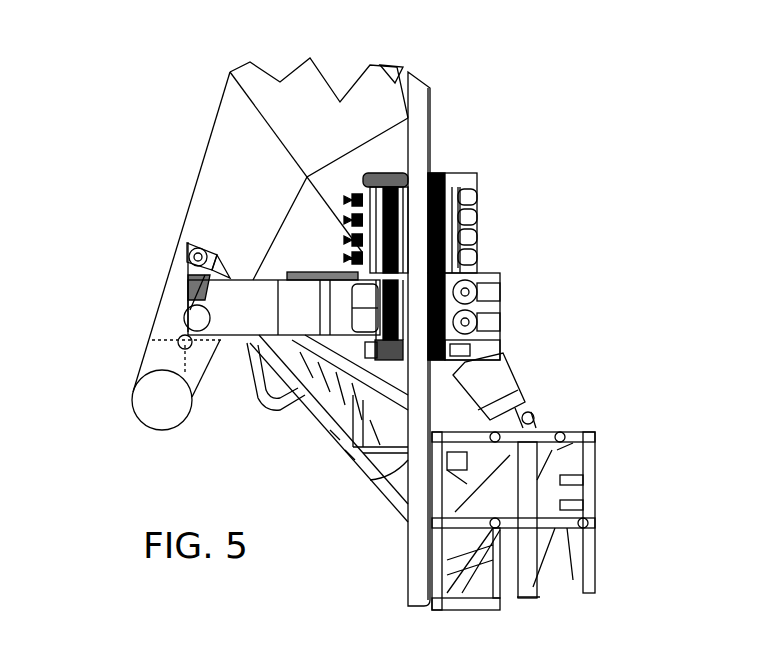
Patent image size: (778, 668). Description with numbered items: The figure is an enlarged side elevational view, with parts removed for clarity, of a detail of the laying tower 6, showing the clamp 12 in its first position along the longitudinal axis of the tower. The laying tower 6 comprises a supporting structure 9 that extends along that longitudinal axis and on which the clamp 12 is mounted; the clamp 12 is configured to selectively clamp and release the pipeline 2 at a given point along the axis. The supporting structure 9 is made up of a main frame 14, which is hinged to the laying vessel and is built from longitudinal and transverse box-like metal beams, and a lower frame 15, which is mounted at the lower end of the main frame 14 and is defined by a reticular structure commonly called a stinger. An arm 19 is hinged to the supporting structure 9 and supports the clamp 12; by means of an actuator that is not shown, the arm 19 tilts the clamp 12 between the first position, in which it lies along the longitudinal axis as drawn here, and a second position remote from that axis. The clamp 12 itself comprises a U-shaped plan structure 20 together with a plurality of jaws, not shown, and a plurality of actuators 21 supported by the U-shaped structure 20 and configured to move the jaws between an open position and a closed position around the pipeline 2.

The pipeline 2 is at (422, 128).
The laying tower 6 is at (563, 106).
The supporting structure 9 is at (126, 317).
The clamp 12 is at (500, 229).
The main frame 14 is at (190, 170).
The lower frame 15 is at (607, 476).
The arm 19 is at (288, 313).
The U-shaped plan structure 20 is at (486, 196).
The actuators 21 is at (348, 258).